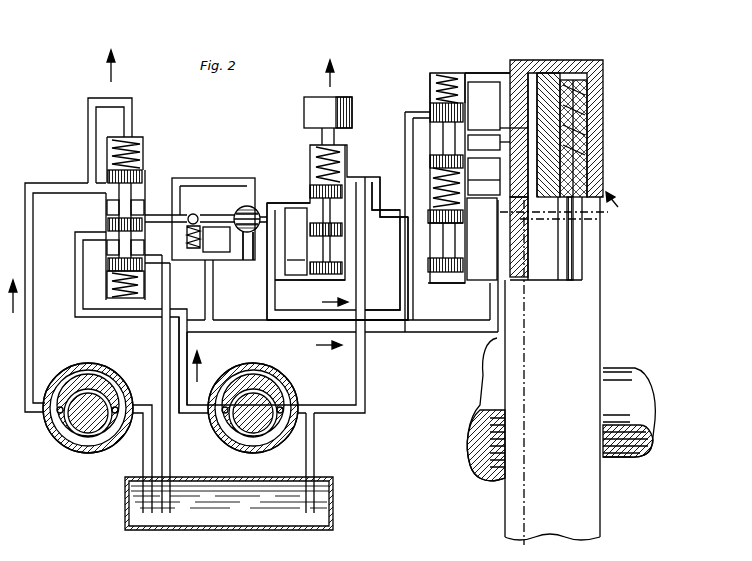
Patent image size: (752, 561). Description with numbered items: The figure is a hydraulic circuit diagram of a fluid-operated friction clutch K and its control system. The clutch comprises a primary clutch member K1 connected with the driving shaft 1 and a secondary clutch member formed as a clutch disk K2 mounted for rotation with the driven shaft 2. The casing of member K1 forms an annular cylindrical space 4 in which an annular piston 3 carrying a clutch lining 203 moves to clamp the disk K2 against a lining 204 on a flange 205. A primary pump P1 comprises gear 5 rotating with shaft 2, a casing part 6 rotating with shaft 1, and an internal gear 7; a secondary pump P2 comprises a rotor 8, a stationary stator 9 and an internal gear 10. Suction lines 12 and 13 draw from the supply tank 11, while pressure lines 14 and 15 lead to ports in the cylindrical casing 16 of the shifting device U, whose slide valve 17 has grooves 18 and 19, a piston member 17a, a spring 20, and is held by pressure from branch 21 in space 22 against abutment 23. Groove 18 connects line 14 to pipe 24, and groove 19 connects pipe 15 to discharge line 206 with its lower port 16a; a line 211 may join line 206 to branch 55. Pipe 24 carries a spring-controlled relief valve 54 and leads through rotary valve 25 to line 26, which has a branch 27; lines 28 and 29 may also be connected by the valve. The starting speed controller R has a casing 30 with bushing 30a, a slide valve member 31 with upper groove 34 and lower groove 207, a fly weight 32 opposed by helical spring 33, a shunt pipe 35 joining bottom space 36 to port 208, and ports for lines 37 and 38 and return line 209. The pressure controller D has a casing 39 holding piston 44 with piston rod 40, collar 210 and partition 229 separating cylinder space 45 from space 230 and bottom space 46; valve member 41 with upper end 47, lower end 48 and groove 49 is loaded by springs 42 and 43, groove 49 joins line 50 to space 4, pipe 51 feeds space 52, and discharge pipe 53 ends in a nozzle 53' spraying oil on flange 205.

The driving shaft 1 is at (480, 372).
The driven shaft 2 is at (640, 368).
The annular piston 3 is at (549, 73).
The annular cylindrical space 4 is at (533, 73).
The gear of primary pump 5 is at (94, 432).
The pump casing part 6 is at (88, 402).
The internal gear 7 is at (90, 366).
The rotor (inner gear) of secondary pump 8 is at (263, 430).
The stator (casing member) of secondary pump 9 is at (269, 381).
The internal gear of secondary pump 10 is at (239, 363).
The supply tank 11 is at (334, 510).
The suction line 12 is at (146, 459).
The suction line 13 is at (316, 428).
The pressure line 14 is at (28, 258).
The pressure line 15 is at (133, 313).
The cylindrical casing 16 is at (108, 224).
The lower port 16a is at (144, 252).
The cylindrical slide valve 17 is at (144, 198).
The piston member 17a is at (142, 172).
The peripheral groove 18 is at (107, 206).
The peripheral groove 19 is at (107, 248).
The spring 20 is at (110, 286).
The branch 21 is at (90, 136).
The space 22 is at (143, 151).
The abutment 23 is at (144, 278).
The pipe 24 is at (212, 220).
The rotary valve 25 is at (209, 239).
The line 26 is at (275, 210).
The branch 27 is at (409, 306).
The line 28 is at (248, 188).
The line 29 is at (244, 247).
The cylindrical valve casing 30 is at (348, 146).
The bushing 30a is at (320, 135).
The slide valve member 31 is at (331, 211).
The fly weight 32 is at (304, 106).
The helical spring 33 is at (313, 150).
The upper peripheral groove 34 is at (318, 215).
The shunt pipe 35 is at (289, 282).
The bottom space 36 is at (312, 285).
The line 37 is at (387, 222).
The line 38 is at (388, 283).
The cylindrical casing 39 is at (432, 196).
The piston rod 40 is at (451, 256).
The valve member 41 is at (456, 130).
The spring 42 is at (449, 73).
The spring 43 is at (461, 186).
The piston 44 is at (463, 269).
The cylinder space 45 is at (466, 241).
The bottom space 46 is at (441, 284).
The upper end of valve member 47 is at (464, 110).
The lower end of valve member 48 is at (430, 161).
The peripheral groove 49 is at (468, 144).
The line 50 is at (500, 128).
The pipe 51 is at (485, 73).
The space 52 is at (430, 79).
The discharge pipe 53 is at (551, 179).
The nozzle 53' is at (632, 206).
The spring-controlled relief valve 54 is at (193, 214).
The branch 55 is at (342, 277).
The clutch lining 203 is at (575, 112).
The lining 204 is at (578, 133).
The flange 205 is at (604, 152).
The discharge line 206 is at (197, 177).
The lower peripheral groove 207 is at (298, 264).
The port 208 is at (292, 188).
The return line 209 is at (359, 377).
The collar 210 is at (463, 214).
The line 211 is at (201, 328).
The partition 229 is at (463, 223).
The space 230 is at (461, 173).
The pressure controller D is at (431, 136).
The friction clutch K is at (574, 80).
The primary clutch member K1 is at (521, 263).
The secondary clutch member K2 is at (574, 262).
The primary pump P1 is at (84, 413).
The secondary pump P2 is at (253, 415).
The starting speed controller R is at (311, 172).
The shifting device U is at (143, 139).